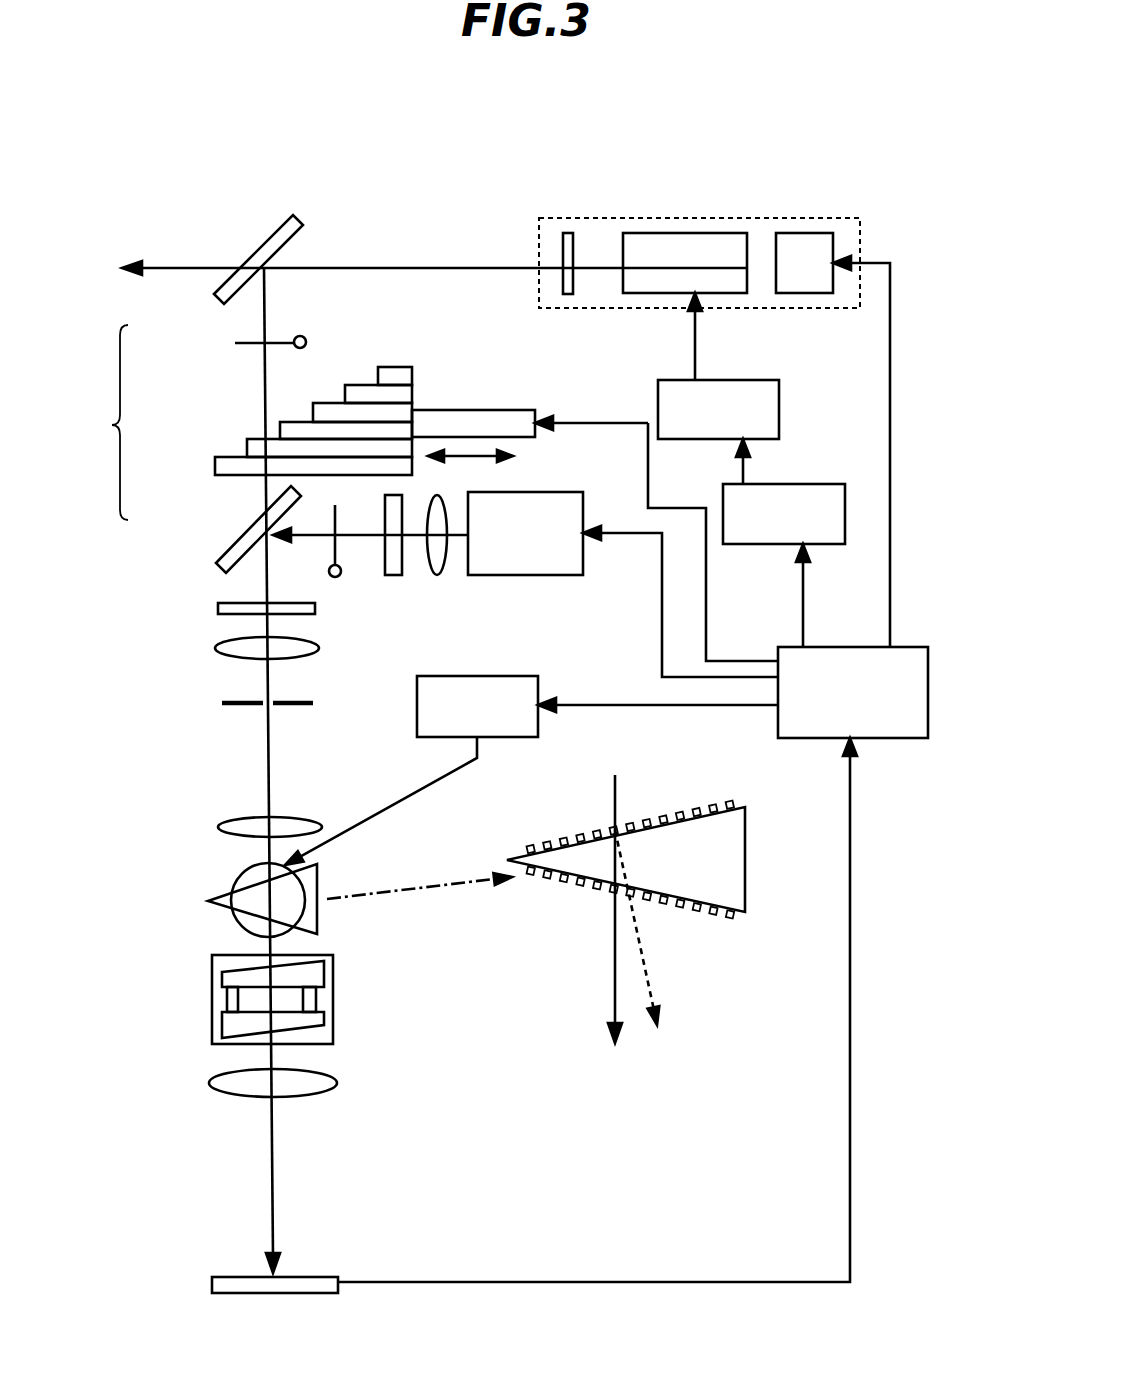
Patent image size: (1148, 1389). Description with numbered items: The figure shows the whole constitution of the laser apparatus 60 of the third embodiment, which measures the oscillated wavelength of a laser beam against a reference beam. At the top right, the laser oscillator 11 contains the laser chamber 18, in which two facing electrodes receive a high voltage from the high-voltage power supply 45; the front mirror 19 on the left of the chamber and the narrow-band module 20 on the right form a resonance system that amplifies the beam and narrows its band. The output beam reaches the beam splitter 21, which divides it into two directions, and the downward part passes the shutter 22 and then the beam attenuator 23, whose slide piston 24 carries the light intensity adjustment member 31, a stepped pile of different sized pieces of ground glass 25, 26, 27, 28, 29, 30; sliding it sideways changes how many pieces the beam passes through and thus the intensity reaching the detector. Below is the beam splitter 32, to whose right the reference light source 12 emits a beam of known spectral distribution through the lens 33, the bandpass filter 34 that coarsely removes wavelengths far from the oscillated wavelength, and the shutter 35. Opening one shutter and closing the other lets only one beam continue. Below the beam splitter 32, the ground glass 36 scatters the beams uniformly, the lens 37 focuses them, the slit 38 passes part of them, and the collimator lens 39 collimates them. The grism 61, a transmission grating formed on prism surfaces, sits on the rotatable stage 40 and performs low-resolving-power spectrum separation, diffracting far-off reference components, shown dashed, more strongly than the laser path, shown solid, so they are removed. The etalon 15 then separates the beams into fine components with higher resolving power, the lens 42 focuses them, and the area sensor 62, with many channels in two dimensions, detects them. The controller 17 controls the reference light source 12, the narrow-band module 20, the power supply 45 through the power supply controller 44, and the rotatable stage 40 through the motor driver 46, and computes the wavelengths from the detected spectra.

The laser apparatus 60 is at (431, 135).
The laser oscillator 11 is at (699, 219).
The reference light source 12 is at (556, 492).
The etalon 15 is at (212, 996).
The controller 17 is at (920, 647).
The laser chamber 18 is at (706, 233).
The front mirror 19 is at (567, 233).
The narrow-band module 20 is at (800, 233).
The beam splitter 21 is at (276, 238).
The shutter 22 is at (304, 337).
The beam attenuator 23 is at (287, 401).
The slide piston 24 is at (467, 422).
The ground glass 25 is at (388, 376).
The ground glass 26 is at (355, 394).
The ground glass 27 is at (322, 412).
The ground glass 28 is at (290, 430).
The ground glass 29 is at (257, 448).
The ground glass 30 is at (212, 470).
The light intensity adjustment member 31 is at (252, 401).
The beam splitter 32 is at (243, 530).
The lens 33 is at (437, 577).
The bandpass filter 34 is at (393, 577).
The shutter 35 is at (335, 578).
The ground glass 36 is at (218, 608).
The lens 37 is at (215, 648).
The slit 38 is at (228, 708).
The collimator lens 39 is at (225, 826).
The rotatable stage 40 is at (248, 878).
The lens 42 is at (209, 1083).
The power supply controller 44 is at (812, 484).
The high-voltage power supply 45 is at (763, 380).
The motor driver 46 is at (510, 676).
The grism 61 is at (228, 898).
The area sensor 62 is at (212, 1283).